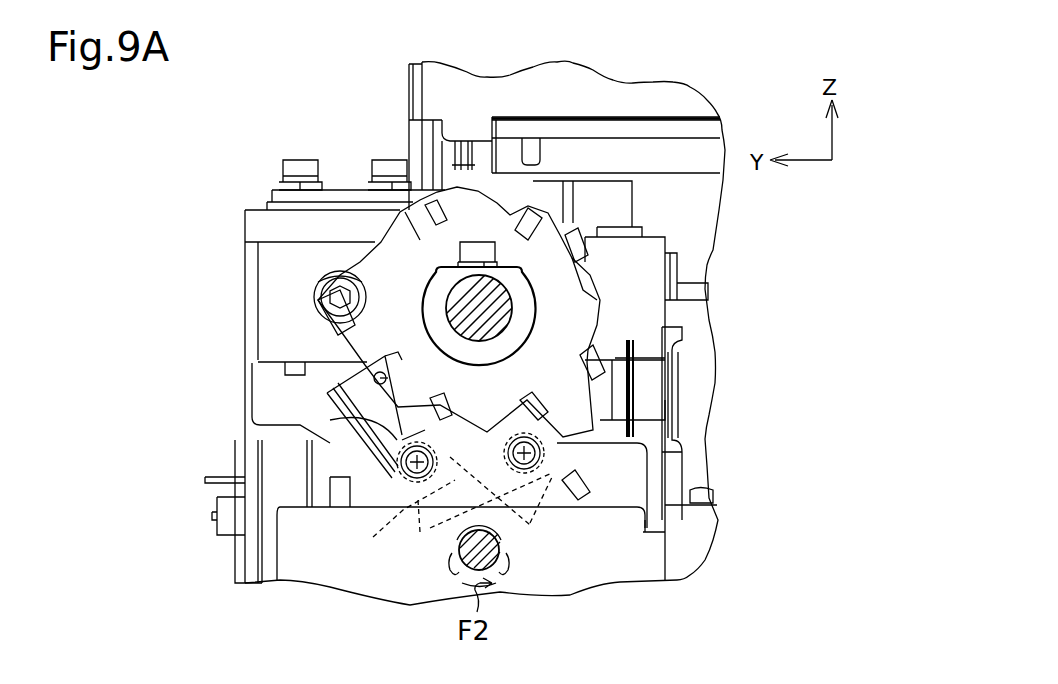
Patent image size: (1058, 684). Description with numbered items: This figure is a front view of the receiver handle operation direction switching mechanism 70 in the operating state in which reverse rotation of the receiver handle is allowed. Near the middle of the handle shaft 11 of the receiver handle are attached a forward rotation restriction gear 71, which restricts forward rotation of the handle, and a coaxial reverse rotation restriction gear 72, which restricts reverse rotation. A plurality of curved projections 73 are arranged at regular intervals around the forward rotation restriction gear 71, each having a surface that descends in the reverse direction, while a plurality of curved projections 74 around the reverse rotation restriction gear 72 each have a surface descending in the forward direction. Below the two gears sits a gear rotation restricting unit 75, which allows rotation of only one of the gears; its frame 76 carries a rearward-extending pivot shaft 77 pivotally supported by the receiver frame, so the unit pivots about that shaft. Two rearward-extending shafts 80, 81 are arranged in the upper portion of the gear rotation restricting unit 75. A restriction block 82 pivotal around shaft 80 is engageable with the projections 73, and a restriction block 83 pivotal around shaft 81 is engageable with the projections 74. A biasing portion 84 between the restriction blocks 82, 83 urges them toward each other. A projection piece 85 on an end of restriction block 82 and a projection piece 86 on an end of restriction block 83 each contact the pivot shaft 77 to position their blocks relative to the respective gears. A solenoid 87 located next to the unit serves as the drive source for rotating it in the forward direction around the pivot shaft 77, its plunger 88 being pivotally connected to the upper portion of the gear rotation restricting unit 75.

The handle shaft 11 is at (460, 330).
The receiver handle operation direction switching mechanism 70 is at (377, 217).
The forward rotation restriction gear 71 is at (402, 196).
The reverse rotation restriction gear 72 is at (465, 202).
The projections 73 is at (400, 213).
The projections 74 is at (372, 256).
The gear rotation restricting unit 75 is at (390, 503).
The frame 76 is at (420, 515).
The pivot shaft 77 is at (496, 568).
The shaft 80 is at (552, 474).
The shaft 81 is at (388, 522).
The restriction block 82 is at (578, 440).
The restriction block 83 is at (322, 448).
The biasing portion 84 is at (383, 368).
The projection piece 85 is at (447, 553).
The projection piece 86 is at (513, 553).
The solenoid 87 is at (703, 331).
The plunger 88 is at (650, 443).